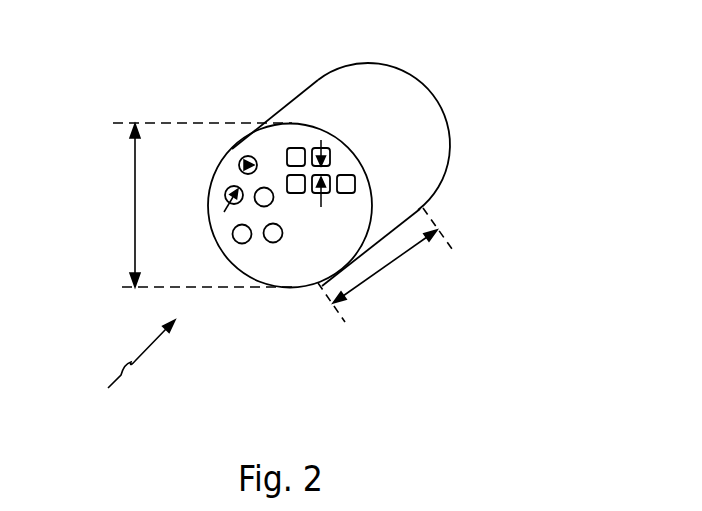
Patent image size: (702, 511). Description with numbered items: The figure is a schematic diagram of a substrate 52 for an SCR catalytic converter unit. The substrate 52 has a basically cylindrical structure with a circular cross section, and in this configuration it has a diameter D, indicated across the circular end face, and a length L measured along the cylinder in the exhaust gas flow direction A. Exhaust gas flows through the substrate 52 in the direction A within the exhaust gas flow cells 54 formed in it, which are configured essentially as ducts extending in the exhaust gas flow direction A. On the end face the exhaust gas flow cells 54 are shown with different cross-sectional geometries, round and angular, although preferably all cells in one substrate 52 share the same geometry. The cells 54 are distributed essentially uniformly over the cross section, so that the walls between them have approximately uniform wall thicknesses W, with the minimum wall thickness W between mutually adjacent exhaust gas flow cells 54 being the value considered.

The substrate 52 is at (445, 112).
The exhaust gas flow cells 54 is at (355, 182).
The wall thickness W is at (432, 50).
The diameter D is at (135, 198).
The length L is at (410, 298).
The exhaust gas flow direction A is at (88, 392).